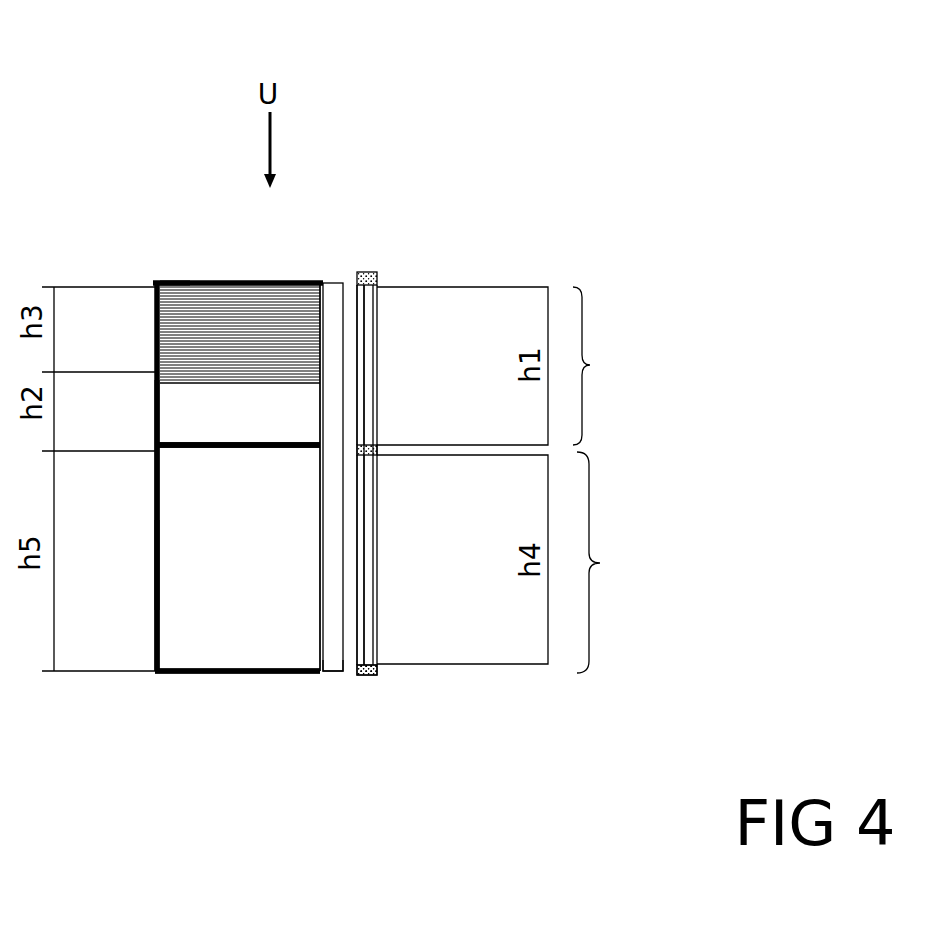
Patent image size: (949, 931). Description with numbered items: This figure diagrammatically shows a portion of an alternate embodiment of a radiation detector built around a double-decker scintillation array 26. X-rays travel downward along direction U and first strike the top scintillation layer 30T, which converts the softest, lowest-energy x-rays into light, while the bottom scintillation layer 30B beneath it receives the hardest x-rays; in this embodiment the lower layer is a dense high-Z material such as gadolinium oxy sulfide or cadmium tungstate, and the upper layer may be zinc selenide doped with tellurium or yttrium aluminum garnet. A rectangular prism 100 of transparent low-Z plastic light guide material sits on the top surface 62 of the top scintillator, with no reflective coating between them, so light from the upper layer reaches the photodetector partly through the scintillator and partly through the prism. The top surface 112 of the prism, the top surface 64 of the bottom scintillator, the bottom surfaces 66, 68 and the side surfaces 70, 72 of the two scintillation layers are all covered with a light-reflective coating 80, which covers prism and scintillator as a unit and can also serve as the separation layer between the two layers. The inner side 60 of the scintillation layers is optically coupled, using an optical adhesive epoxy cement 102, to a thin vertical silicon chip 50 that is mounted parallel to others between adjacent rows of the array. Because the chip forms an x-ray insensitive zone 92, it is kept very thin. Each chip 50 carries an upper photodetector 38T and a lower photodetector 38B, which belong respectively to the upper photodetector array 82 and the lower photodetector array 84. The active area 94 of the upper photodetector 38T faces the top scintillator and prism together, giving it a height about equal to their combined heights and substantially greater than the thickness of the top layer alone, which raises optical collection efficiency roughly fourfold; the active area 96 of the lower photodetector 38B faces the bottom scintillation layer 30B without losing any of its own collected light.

The scintillation array 26 is at (153, 691).
The top scintillation layer 30T is at (157, 407).
The bottom scintillation layer 30B is at (232, 656).
The prism 100 is at (210, 318).
The top surface of the prism 112 is at (190, 284).
The top surface of the top scintillator 62 is at (168, 384).
The side surface of the top scintillation layer 70 is at (160, 418).
The bottom surface of the top scintillation layer 66 is at (281, 443).
The top surface of the bottom scintillator 64 is at (277, 447).
The reflective coating 80 is at (155, 537).
The side surface of the bottom scintillation layer 72 is at (160, 565).
The bottom surface of the bottom scintillation layer 68 is at (190, 669).
The inner side 60 is at (323, 283).
The optical adhesive epoxy cement 102 is at (333, 672).
The chip 50 is at (367, 272).
The x-ray insensitive zone 92 is at (365, 676).
The active area of the upper photodetector 94 is at (360, 407).
The active area of the lower photodetector 96 is at (358, 612).
The upper photodetector 38T is at (377, 353).
The lower photodetector 38B is at (377, 492).
The upper photodetector array 82 is at (605, 366).
The lower photodetector array 84 is at (611, 562).